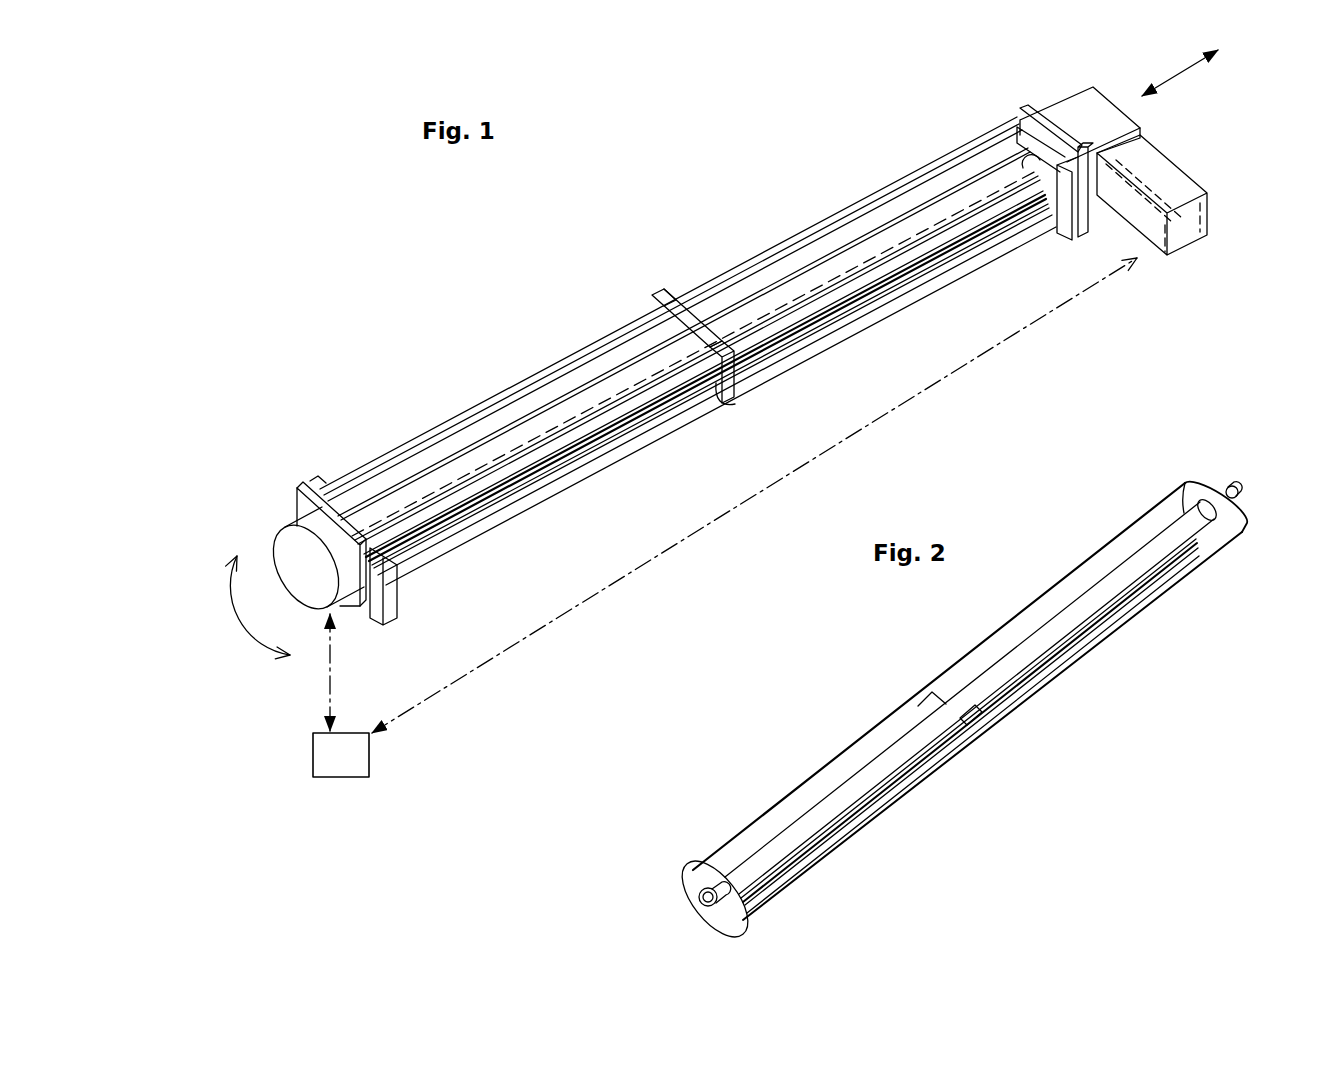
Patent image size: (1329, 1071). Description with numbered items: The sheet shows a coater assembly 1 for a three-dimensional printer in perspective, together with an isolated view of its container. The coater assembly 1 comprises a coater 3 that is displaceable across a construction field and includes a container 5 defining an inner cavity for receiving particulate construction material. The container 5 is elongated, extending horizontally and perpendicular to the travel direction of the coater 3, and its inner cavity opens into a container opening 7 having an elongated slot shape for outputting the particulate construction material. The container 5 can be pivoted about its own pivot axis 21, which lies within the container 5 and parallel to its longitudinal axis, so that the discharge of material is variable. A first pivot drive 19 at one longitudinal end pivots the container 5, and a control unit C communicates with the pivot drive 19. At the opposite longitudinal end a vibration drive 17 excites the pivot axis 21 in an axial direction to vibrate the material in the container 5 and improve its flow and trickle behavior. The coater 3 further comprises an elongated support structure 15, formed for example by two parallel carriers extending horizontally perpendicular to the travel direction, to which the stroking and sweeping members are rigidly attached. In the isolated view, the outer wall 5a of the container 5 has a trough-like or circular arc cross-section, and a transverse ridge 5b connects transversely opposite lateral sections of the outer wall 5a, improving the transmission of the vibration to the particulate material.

In FIG. 1, the coater assembly 1 is at (312, 262).
In FIG. 1, the coater 3 is at (412, 374).
In FIG. 1, the container 5 is at (795, 300).
In FIG. 2, the container 5 is at (762, 770).
In FIG. 2, the outer wall 5a is at (910, 714).
In FIG. 2, the transverse ridge 5b is at (980, 725).
In FIG. 2, the container opening 7 is at (1085, 630).
In FIG. 1, the support structure 15 is at (688, 288).
In FIG. 1, the vibration drive 17 is at (1082, 122).
In FIG. 1, the pivot drive 19 is at (306, 545).
In FIG. 2, the pivot axis 21 is at (1236, 488).